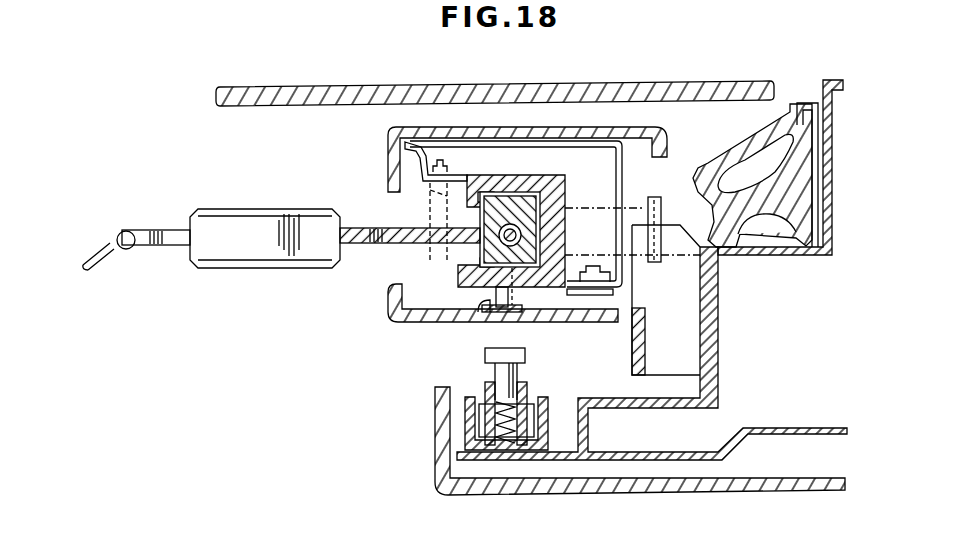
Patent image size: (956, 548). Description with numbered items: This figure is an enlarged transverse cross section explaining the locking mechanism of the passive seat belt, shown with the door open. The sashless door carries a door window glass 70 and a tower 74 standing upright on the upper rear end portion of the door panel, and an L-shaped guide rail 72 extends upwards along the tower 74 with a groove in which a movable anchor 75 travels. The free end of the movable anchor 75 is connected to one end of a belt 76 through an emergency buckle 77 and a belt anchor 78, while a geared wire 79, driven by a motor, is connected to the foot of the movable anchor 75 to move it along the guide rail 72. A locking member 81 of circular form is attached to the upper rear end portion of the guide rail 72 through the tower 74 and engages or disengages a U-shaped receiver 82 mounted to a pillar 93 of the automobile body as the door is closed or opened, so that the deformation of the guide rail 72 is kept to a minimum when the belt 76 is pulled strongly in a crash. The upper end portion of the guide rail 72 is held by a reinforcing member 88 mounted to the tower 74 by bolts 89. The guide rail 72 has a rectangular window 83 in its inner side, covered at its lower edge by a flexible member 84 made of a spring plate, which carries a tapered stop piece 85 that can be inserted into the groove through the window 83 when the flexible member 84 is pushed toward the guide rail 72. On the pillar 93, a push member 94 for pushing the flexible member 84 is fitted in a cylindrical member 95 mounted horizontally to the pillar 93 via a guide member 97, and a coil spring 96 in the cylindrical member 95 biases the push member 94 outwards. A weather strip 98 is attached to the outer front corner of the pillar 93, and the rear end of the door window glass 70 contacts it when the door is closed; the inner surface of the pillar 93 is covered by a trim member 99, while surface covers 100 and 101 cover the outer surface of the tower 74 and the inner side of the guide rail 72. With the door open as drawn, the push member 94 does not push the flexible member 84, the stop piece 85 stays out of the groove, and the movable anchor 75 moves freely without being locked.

The door window glass 70 is at (278, 92).
The guide rail 72 is at (525, 182).
The tower 74 is at (620, 178).
The movable anchor 75 is at (368, 228).
The belt 76 is at (113, 243).
The emergency buckle 77 is at (290, 216).
The belt anchor 78 is at (157, 232).
The geared wire 79 is at (476, 246).
The locking member 81 is at (662, 208).
The U-shaped receiver 82 is at (711, 331).
The rectangular window 83 is at (531, 324).
The flexible member 84 is at (501, 314).
The stop piece 85 is at (473, 316).
The reinforcing member 88 is at (572, 297).
The bolts 89 is at (430, 208).
The pillar 93 is at (832, 80).
The push member 94 is at (490, 373).
The cylindrical member 95 is at (530, 392).
The coil spring 96 is at (497, 445).
The guide member 97 is at (468, 430).
The weather strip 98 is at (741, 144).
The trim member 99 is at (645, 488).
The surface cover 100 is at (388, 136).
The surface cover 101 is at (388, 296).